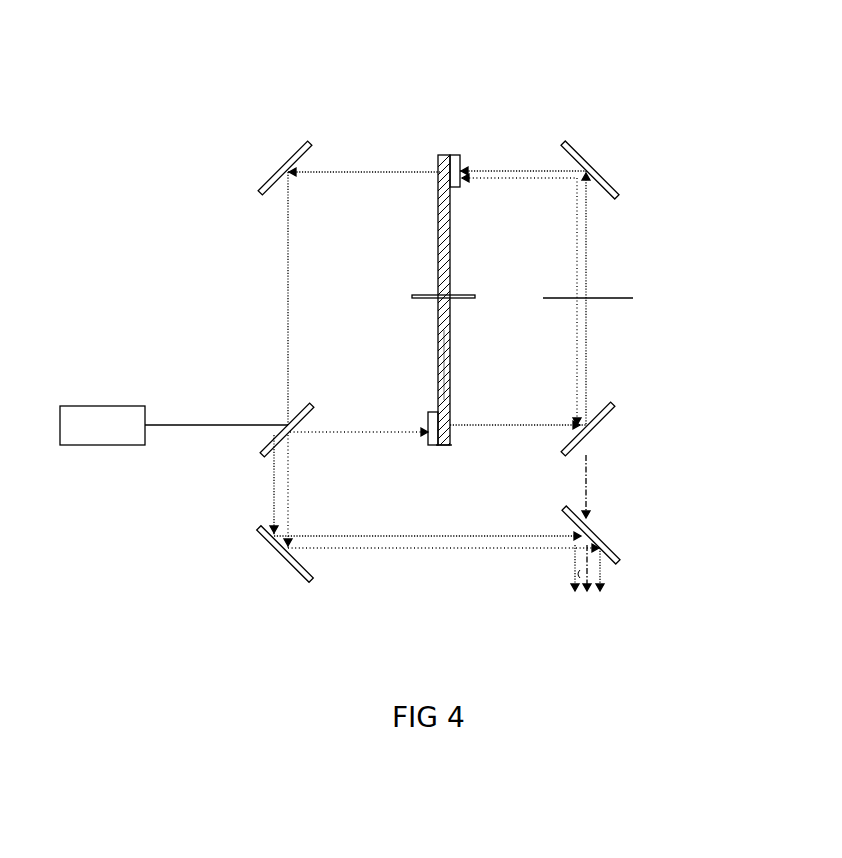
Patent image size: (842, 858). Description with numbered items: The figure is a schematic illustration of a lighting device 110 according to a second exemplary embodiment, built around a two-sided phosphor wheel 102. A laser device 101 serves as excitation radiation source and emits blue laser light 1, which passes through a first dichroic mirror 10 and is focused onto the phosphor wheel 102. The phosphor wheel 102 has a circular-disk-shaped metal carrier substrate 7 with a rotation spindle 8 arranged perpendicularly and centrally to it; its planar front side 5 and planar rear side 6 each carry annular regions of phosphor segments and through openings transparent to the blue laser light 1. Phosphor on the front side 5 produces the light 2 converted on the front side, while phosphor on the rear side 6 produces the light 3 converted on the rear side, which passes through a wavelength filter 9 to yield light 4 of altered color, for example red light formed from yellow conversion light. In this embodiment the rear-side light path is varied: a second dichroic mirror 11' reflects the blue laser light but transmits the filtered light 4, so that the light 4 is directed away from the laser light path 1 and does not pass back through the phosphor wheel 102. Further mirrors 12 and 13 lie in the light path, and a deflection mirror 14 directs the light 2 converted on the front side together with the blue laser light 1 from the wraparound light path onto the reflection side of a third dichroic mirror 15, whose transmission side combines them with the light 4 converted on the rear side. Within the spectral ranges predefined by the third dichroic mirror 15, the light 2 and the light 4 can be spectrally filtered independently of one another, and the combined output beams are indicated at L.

The lighting device 110 is at (497, 78).
The laser device 101 is at (105, 445).
The phosphor wheel 102 is at (440, 456).
The dichroic mirror 10 is at (266, 449).
The second dichroic mirror 11' is at (609, 452).
The mirror 12 is at (606, 168).
The mirror 13 is at (278, 172).
The deflection mirror 14 is at (283, 557).
The third dichroic mirror 15 is at (610, 550).
The front side 5 is at (434, 243).
The rear side 6 is at (456, 362).
The carrier substrate 7 is at (449, 268).
The rotation spindle 8 is at (416, 300).
The wavelength filter 9 is at (611, 297).
The blue laser light 1 is at (550, 616).
The light converted on the front side 2 is at (634, 617).
The light converted on the rear side 3 is at (519, 299).
The filtered rear-side converted light 4 is at (582, 624).
The beam spacing L is at (589, 625).